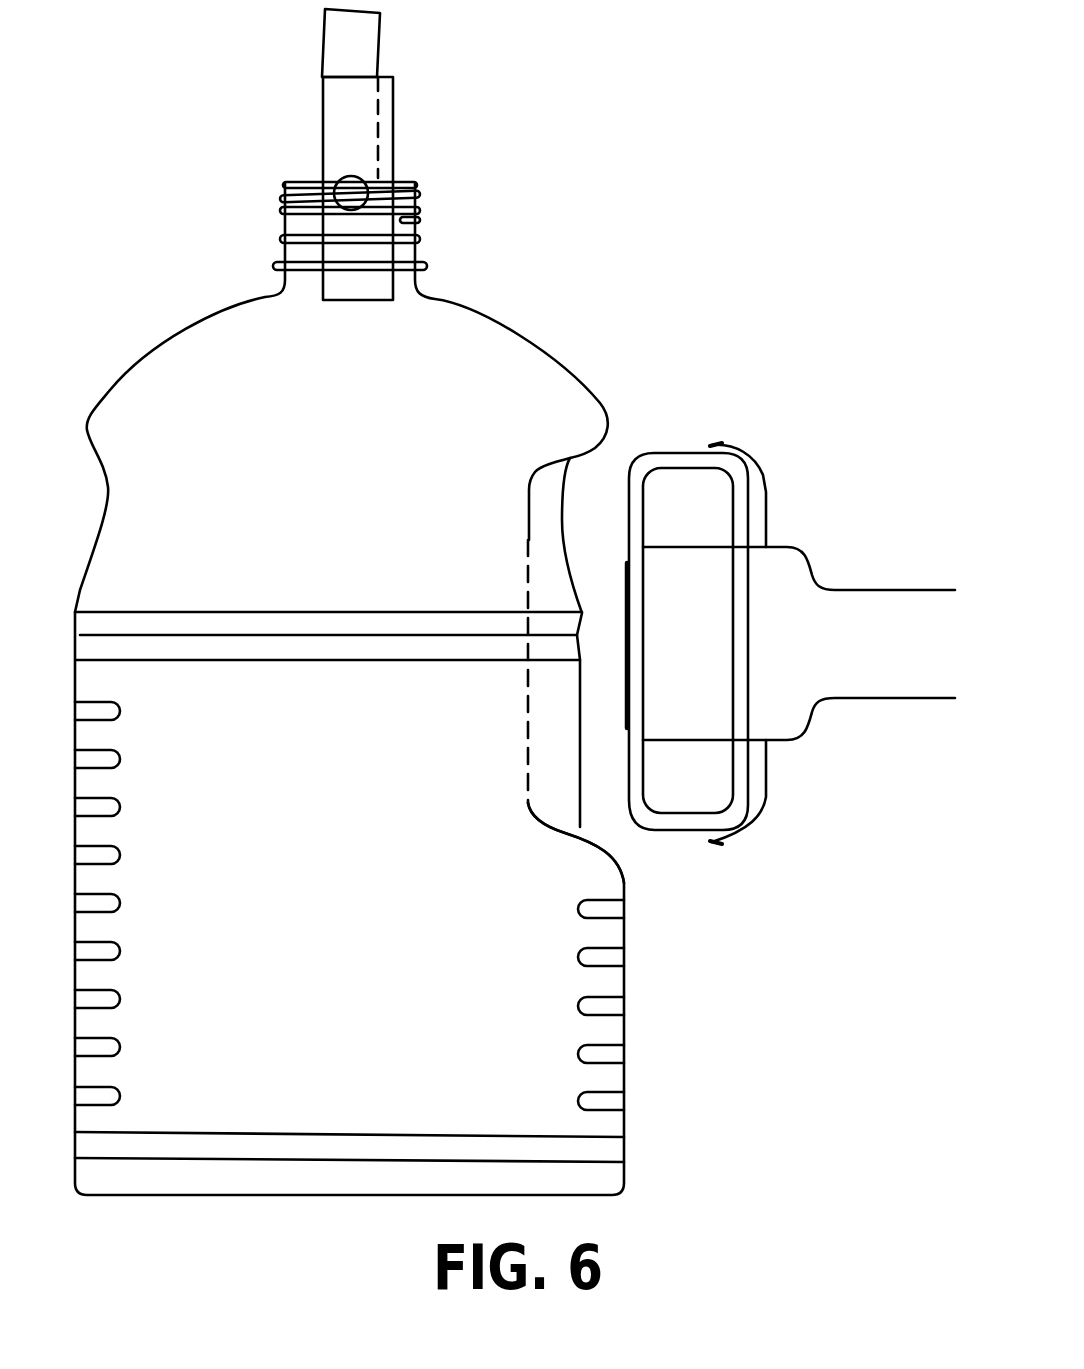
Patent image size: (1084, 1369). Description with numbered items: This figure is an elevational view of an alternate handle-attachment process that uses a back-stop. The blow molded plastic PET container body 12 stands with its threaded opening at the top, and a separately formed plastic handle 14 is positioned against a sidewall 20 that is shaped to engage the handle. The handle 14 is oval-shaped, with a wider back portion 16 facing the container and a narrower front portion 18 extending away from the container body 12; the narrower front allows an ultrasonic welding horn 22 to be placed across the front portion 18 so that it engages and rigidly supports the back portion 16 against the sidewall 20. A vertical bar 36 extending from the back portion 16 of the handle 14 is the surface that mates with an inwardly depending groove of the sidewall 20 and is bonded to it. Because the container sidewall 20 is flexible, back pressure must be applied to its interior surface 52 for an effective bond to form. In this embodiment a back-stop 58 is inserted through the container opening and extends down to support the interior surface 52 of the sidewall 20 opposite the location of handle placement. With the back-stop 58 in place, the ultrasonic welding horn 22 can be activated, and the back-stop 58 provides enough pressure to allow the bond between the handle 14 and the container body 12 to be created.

The container body 12 is at (515, 322).
The handle 14 is at (692, 445).
The back portion 16 is at (628, 498).
The front portion 18 is at (768, 497).
The sidewall 20 is at (528, 805).
The ultrasonic welding horn 22 is at (873, 655).
The vertical bar 36 is at (627, 703).
The interior surface 52 is at (528, 698).
The back-stop 58 is at (394, 97).